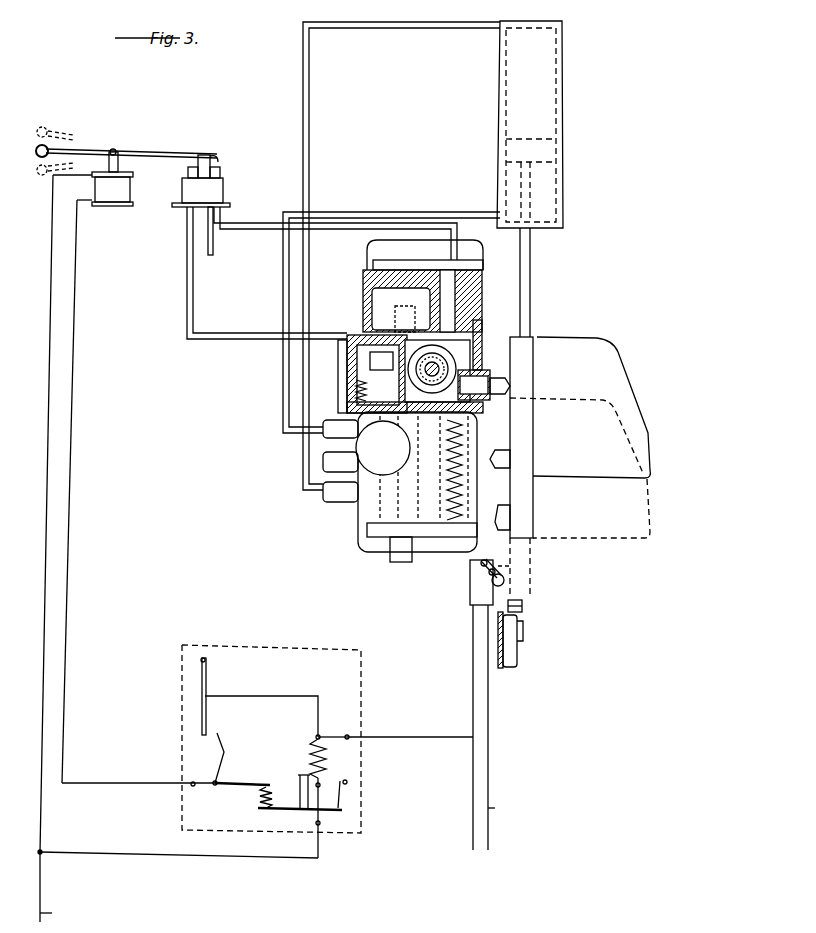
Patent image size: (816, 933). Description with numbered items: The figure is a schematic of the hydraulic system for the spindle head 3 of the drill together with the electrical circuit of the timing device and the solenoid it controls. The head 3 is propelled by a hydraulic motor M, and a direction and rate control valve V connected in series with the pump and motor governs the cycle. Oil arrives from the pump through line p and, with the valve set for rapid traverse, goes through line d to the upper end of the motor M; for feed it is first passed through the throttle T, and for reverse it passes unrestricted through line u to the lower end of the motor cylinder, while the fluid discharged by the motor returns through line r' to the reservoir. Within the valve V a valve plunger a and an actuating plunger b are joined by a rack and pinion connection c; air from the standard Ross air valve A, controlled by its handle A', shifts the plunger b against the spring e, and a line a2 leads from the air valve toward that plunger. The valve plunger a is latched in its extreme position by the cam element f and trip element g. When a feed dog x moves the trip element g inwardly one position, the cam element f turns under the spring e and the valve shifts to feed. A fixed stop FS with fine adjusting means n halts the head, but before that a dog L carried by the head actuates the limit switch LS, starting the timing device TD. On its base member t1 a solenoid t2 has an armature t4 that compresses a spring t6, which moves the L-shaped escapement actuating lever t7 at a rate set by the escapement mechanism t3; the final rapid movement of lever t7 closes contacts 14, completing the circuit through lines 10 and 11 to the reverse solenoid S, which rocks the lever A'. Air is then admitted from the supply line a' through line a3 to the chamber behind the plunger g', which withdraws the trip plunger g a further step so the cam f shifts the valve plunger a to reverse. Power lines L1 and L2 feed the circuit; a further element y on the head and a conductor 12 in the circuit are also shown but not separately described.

The handle of the Ross air valve A' is at (126, 149).
The Ross air valve A is at (190, 181).
The reverse solenoid S is at (122, 206).
The air supply line a' is at (225, 234).
The air line a2 is at (259, 222).
The air line a3 is at (193, 297).
The line to lower end of motor u is at (283, 281).
The line to upper end of motor d is at (310, 268).
The hydraulic motor M is at (563, 140).
The valve plunger a is at (405, 286).
The rack and pinion connection c is at (405, 309).
The actuating plunger b is at (455, 320).
The plunger g' is at (359, 374).
The cam element f is at (458, 358).
The trip element g is at (508, 377).
The feed dog x is at (510, 386).
The direction and rate control valve V is at (362, 508).
The spring e is at (472, 488).
The throttle T is at (362, 445).
The pump discharge line p is at (323, 463).
The return line r' is at (384, 566).
The dog L is at (505, 518).
The lug y is at (505, 458).
The spindle head 3 is at (622, 391).
The limit switch LS is at (470, 592).
The adjusting means n is at (524, 604).
The fixed stop FS is at (518, 642).
The line 10 is at (473, 683).
The power line L1 is at (502, 811).
The timing device TD is at (247, 645).
The contacts 14 is at (252, 711).
The solenoid of timing device t2 is at (315, 760).
The base member t1 is at (362, 770).
The armature t4 is at (297, 788).
The spring t6 is at (260, 803).
The escapement actuating lever t7 is at (225, 790).
The escapement mechanism t3 is at (220, 781).
The wire 12 is at (320, 826).
The line 11 is at (142, 779).
The power line L2 is at (270, 860).